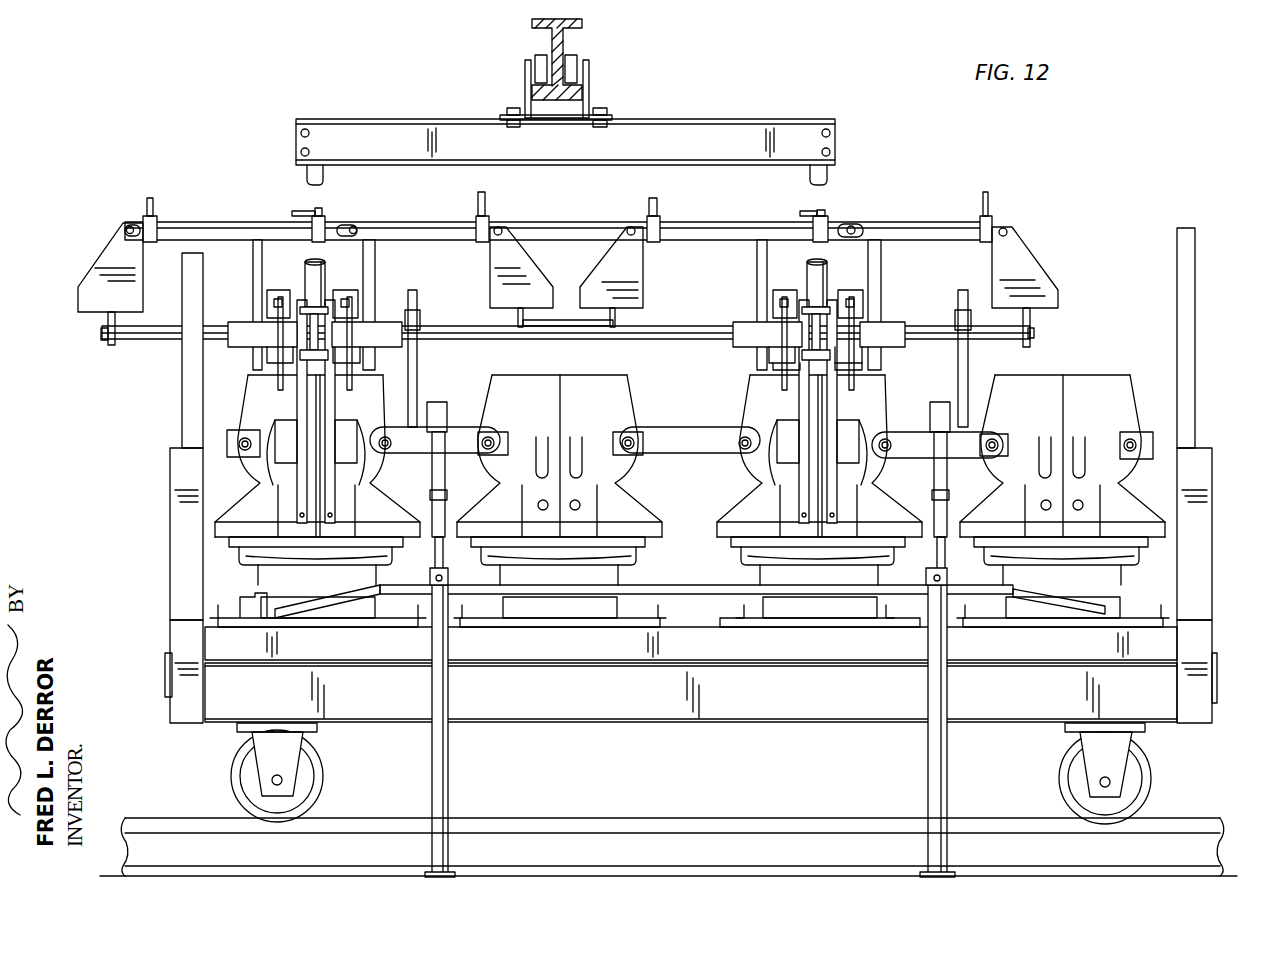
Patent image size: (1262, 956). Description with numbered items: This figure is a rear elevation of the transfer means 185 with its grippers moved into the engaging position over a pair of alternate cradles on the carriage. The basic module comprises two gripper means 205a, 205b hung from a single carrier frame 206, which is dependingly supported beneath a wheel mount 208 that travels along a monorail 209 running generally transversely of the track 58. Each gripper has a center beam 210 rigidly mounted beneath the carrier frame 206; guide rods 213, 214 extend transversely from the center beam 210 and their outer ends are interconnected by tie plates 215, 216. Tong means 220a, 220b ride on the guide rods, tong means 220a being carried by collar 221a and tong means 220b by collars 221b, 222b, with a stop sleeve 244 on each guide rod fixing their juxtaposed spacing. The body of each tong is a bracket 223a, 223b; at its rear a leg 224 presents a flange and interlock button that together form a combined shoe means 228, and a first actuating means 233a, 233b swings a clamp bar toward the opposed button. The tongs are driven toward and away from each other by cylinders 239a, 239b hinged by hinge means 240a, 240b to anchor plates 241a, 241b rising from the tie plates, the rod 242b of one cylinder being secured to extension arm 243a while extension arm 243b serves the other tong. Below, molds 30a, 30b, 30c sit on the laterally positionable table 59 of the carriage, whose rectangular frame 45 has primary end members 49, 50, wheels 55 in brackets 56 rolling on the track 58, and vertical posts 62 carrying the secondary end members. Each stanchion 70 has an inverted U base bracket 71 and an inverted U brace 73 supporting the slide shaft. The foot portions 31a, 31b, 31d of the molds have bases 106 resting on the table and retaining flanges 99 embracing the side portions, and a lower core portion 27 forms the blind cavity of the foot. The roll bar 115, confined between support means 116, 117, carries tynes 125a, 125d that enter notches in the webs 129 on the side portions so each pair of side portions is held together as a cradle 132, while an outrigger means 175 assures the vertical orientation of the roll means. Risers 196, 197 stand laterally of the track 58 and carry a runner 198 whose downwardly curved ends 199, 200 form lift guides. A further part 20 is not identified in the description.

The transfer means 185 is at (100, 137).
The monorail 209 is at (563, 45).
The wheel mount 208 is at (590, 72).
The carrier frame 206 is at (705, 137).
The gripper means 205a is at (893, 183).
The gripper means 205b is at (393, 193).
The cylinder 239a is at (913, 226).
The cylinder 239b is at (713, 225).
The hinge means 240a is at (1005, 232).
The hinge means 240b is at (632, 228).
The extensible and retractable rod 242b is at (829, 224).
The anchor plate 241a is at (1035, 275).
The anchor plate 241b is at (603, 265).
The first actuating means 233a is at (866, 284).
The first actuating means 233b is at (782, 288).
The stop sleeve 244 is at (812, 324).
The center beam 210 is at (817, 296).
The extension arm 243a is at (758, 272).
The extension arm 243b is at (882, 256).
The collar 222b is at (758, 318).
The collar 221a is at (882, 326).
The collar 221b is at (740, 328).
The tie plate 216 is at (605, 322).
The guide rod 214 is at (635, 342).
The tong means 220a is at (887, 365).
The tong means 220b is at (743, 358).
The bracket 223a is at (886, 376).
The bracket 223b is at (745, 370).
The tie plate 215 is at (1032, 318).
The guide rod 213 is at (1015, 345).
The brace 73 is at (183, 362).
The stanchion 70 is at (162, 417).
The base bracket 71 is at (168, 520).
The vertical post 62 is at (185, 644).
The primary end member 49 is at (170, 706).
The primary end member 50 is at (1216, 712).
The mold 30a is at (1109, 389).
The mold 30b is at (761, 503).
The mold 30c is at (513, 404).
The web 129 is at (1132, 420).
The tyne 125a is at (1147, 443).
The tyne 125d is at (746, 440).
The roll bar 115 is at (655, 432).
The support means 116 is at (453, 411).
The support means 117 is at (926, 418).
The combined shoe means 228 is at (260, 464).
The leg 224 is at (260, 392).
The cradle 132 is at (541, 371).
The base flange 20 is at (642, 562).
The lower core portion 27 is at (515, 583).
The runner 198 is at (662, 593).
The downwardly curved end 199 is at (318, 600).
The downwardly curved end 200 is at (1050, 600).
The outrigger means 175 is at (425, 587).
The base 106 is at (528, 628).
The retaining flange 99 is at (750, 606).
The table 59 is at (595, 650).
The frame 45 is at (633, 733).
The foot portion 31a is at (1018, 617).
The foot portion 31b is at (790, 624).
The foot portion 31d is at (233, 604).
The wheel 55 is at (325, 772).
The bracket 56 is at (275, 766).
The riser 196 is at (450, 772).
The riser 197 is at (947, 773).
The track 58 is at (602, 833).